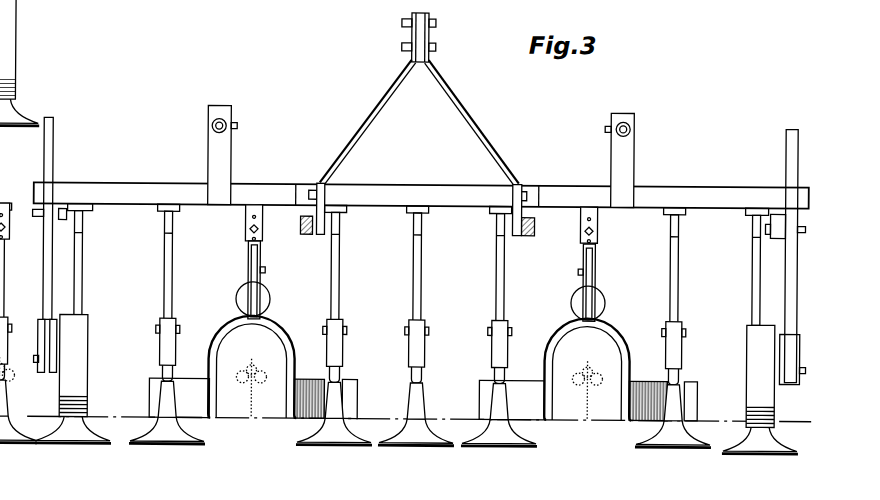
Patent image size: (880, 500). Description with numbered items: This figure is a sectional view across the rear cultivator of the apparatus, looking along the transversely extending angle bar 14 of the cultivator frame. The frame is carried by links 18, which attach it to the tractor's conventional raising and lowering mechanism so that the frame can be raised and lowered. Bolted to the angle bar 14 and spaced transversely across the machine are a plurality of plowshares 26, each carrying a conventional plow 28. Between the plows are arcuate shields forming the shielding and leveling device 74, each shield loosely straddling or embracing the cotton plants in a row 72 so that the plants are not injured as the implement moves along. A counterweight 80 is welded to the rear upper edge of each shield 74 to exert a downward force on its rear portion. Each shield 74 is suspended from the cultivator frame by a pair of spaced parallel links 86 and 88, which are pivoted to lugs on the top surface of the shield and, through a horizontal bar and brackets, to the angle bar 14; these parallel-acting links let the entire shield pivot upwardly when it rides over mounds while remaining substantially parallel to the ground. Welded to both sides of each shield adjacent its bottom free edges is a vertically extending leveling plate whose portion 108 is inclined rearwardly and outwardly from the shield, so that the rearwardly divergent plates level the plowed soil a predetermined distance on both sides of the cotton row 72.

The angle bar 14 is at (701, 195).
The links 18 is at (465, 118).
The plowshare 26 is at (421, 253).
The plow 28 is at (498, 437).
The cotton plant row 72 is at (301, 374).
The shielding and leveling device 74 is at (287, 330).
The counterweight 80 is at (236, 305).
The link 86 is at (263, 280).
The link 88 is at (246, 278).
The inclined portion of leveling plate 108 is at (193, 407).